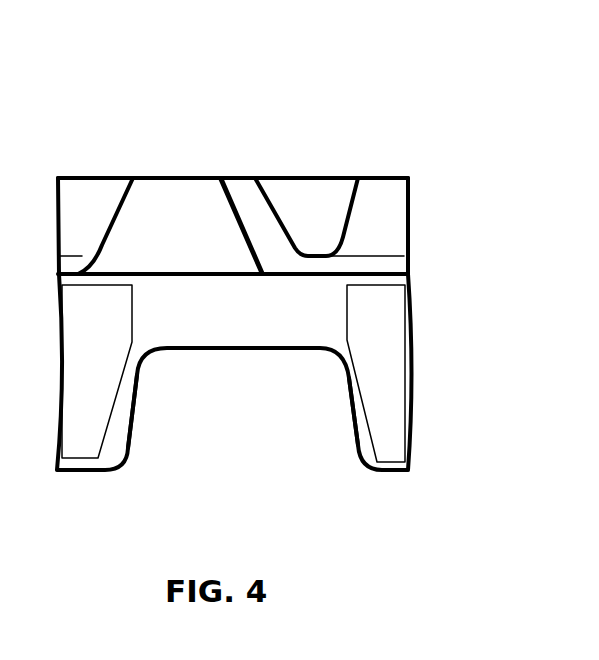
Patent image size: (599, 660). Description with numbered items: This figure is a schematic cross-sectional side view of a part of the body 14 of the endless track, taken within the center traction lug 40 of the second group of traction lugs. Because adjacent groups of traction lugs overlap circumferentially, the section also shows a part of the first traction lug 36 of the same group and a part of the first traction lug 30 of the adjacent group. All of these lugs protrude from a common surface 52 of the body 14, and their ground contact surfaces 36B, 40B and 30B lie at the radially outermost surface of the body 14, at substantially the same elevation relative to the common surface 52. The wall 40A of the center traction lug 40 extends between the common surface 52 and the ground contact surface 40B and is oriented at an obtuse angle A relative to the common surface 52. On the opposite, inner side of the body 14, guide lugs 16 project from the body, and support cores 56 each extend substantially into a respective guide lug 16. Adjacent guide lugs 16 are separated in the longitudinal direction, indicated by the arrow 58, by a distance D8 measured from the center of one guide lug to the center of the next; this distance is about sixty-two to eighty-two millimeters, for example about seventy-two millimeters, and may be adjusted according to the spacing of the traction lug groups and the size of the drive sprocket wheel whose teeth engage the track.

The body 14 is at (337, 80).
The guide lug 16 is at (135, 405).
The first traction lug 30 is at (363, 231).
The ground contact surface 30B is at (372, 177).
The first traction lug 36 is at (68, 233).
The ground contact surface 36B is at (89, 177).
The center traction lug 40 is at (164, 233).
The wall 40A is at (247, 207).
The ground contact surface 40B is at (171, 177).
The common surface 52 is at (362, 273).
The support core 56 is at (86, 331).
The arrow 58 is at (522, 408).
The obtuse angle A is at (252, 238).
The distance D8 is at (67, 479).